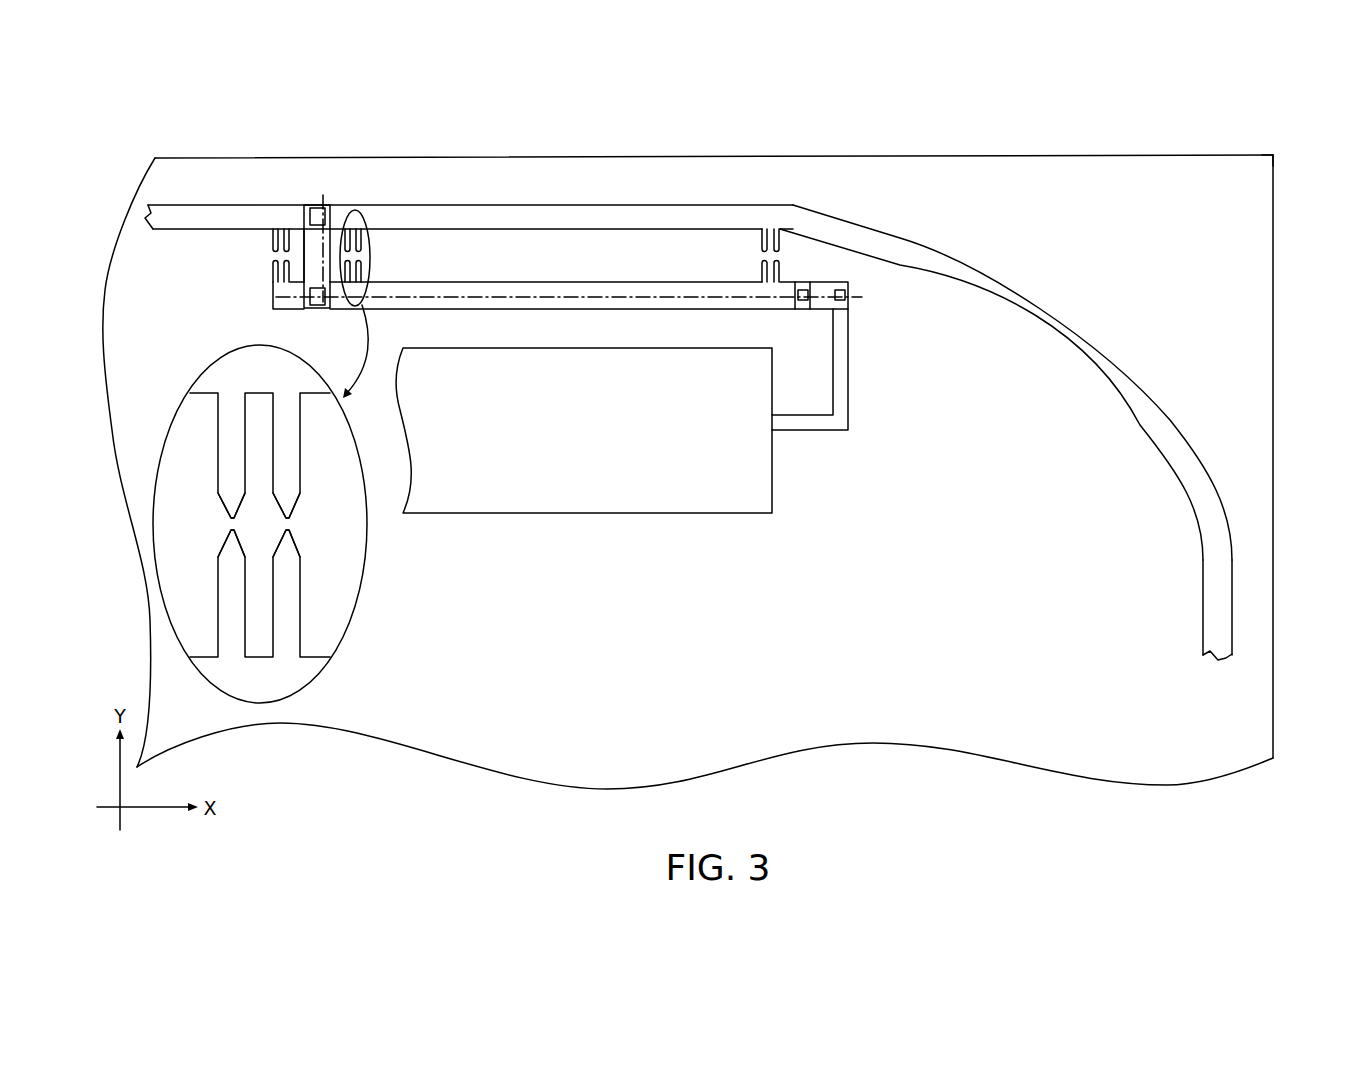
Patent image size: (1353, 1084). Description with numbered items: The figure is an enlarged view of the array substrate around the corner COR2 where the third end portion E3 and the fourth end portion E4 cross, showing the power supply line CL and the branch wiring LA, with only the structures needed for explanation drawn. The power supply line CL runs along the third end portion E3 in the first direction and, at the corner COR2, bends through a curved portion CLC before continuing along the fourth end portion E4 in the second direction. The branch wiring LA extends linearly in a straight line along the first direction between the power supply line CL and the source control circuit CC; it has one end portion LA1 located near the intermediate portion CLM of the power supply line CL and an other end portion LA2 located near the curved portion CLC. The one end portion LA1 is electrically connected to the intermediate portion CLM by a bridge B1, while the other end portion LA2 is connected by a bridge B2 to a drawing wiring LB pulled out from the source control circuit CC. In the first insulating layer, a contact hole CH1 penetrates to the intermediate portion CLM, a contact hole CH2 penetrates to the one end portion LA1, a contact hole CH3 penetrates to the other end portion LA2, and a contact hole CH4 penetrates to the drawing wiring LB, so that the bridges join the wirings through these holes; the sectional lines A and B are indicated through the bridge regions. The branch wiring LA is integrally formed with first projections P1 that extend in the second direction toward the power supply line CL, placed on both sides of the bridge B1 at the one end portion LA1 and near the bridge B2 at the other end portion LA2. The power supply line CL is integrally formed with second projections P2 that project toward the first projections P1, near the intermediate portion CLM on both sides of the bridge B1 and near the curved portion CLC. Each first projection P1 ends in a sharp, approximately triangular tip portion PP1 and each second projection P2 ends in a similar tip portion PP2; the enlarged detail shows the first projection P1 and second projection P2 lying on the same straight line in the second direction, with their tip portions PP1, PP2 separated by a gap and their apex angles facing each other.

The third end portion E3 is at (422, 170).
The fourth end portion E4 is at (1252, 639).
The corner COR2 is at (1261, 168).
The intermediate portion CLM is at (306, 205).
The contact hole CH1 is at (332, 217).
The contact hole CH2 is at (317, 307).
The contact hole CH3 is at (804, 289).
The contact hole CH4 is at (840, 306).
The line A is at (319, 237).
The line B is at (581, 295).
The bridge B1 is at (303, 228).
The bridge B2 is at (822, 285).
The one end portion LA1 is at (297, 300).
The branch wiring LA is at (581, 282).
The other end portion LA2 is at (789, 309).
The drawing wiring LB is at (845, 432).
The source control circuit CC is at (683, 513).
The curved portion CLC is at (929, 252).
The power supply line CL is at (1205, 634).
The first projection P1 is at (272, 267).
The second projection P2 is at (272, 242).
The tip portion PP1 is at (291, 538).
The tip portion PP2 is at (291, 503).